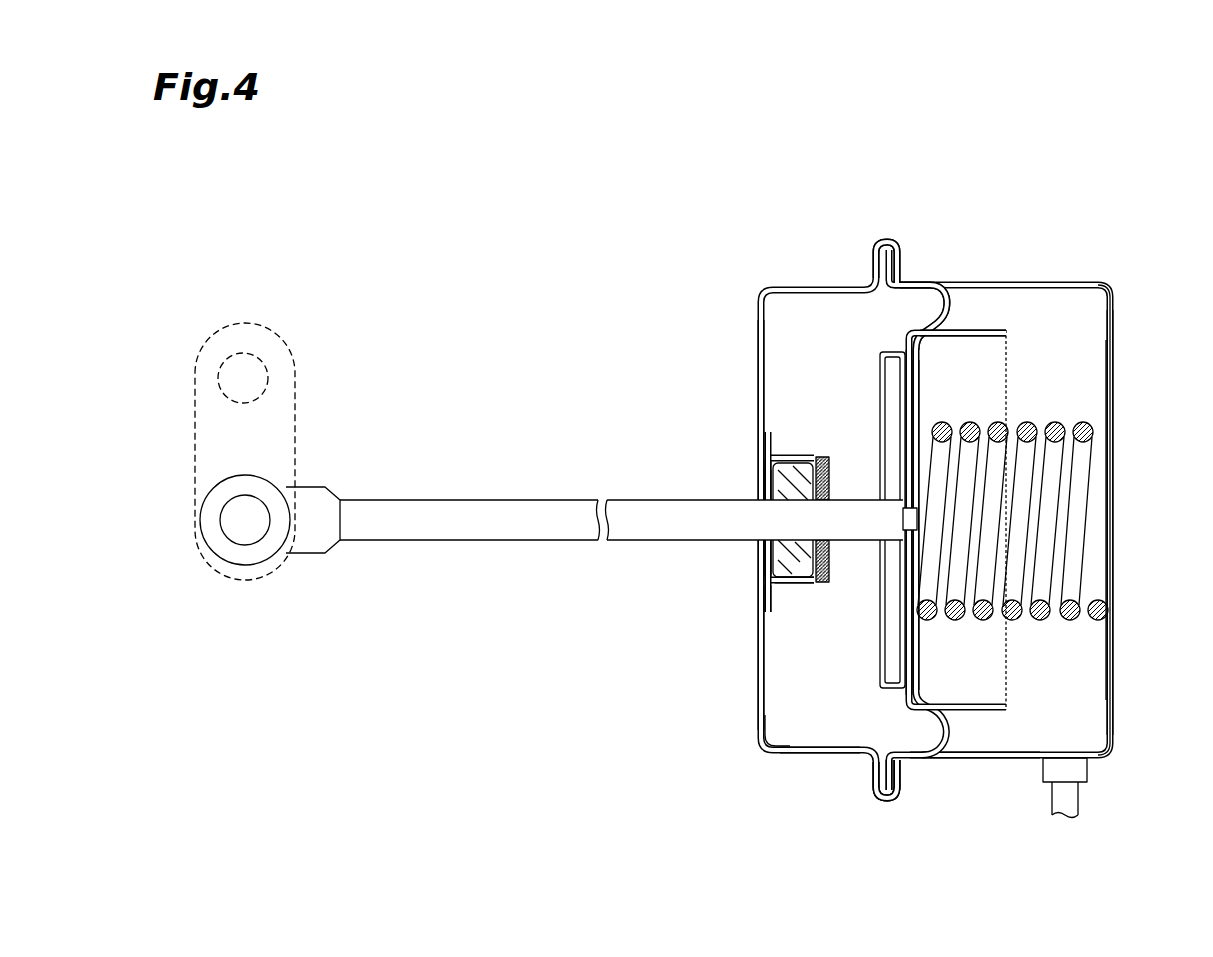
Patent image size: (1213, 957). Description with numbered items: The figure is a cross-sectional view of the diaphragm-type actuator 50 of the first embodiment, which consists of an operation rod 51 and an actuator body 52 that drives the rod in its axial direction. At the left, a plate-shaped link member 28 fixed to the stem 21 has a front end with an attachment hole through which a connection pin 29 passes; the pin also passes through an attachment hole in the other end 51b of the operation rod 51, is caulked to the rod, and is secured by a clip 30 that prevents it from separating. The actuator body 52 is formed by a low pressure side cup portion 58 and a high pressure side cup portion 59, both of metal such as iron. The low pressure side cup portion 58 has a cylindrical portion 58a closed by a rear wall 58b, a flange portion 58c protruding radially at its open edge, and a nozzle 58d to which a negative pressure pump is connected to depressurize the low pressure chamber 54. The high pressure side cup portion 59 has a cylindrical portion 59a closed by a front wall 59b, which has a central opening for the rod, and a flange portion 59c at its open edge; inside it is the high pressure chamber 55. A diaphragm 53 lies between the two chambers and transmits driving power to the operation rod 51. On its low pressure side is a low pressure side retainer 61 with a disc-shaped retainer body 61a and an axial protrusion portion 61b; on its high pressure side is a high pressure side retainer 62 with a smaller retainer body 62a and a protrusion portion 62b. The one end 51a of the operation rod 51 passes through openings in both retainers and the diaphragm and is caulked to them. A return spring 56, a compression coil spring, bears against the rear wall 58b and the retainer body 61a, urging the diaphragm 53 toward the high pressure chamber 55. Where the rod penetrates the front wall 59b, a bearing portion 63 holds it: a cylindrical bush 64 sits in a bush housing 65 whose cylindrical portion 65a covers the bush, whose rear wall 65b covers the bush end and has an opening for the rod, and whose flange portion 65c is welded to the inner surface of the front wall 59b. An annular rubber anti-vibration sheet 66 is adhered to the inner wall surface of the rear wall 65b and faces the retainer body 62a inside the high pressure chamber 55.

The stem 21 is at (230, 352).
The link member 28 is at (298, 416).
The connection pin 29 is at (232, 528).
The clip 30 is at (246, 557).
The diaphragm-type actuator 50 is at (575, 212).
The operation rod 51 is at (470, 522).
The one end of the operation rod 51a is at (912, 517).
The other end of the operation rod 51b is at (310, 546).
The actuator body 52 is at (842, 174).
The diaphragm 53 is at (903, 400).
The low pressure chamber 54 is at (1093, 653).
The high pressure chamber 55 is at (776, 718).
The return spring 56 is at (1083, 460).
The low pressure side cup portion 58 is at (938, 285).
The cylindrical portion 58a is at (997, 760).
The rear wall 58b is at (1115, 700).
The flange portion 58c is at (897, 785).
The nozzle 58d is at (1071, 797).
The high pressure side cup portion 59 is at (848, 285).
The cylindrical portion 59a is at (818, 757).
The front wall 59b is at (757, 724).
The flange portion 59c is at (873, 792).
The low pressure side retainer 61 is at (972, 216).
The retainer body 61a is at (920, 363).
The protrusion portion 61b is at (990, 330).
The high pressure side retainer 62 is at (810, 216).
The retainer body 62a is at (905, 396).
The protrusion portion 62b is at (890, 350).
The bearing portion 63 is at (729, 554).
The bush 64 is at (786, 483).
The bush housing 65 is at (766, 446).
The cylindrical portion 65a is at (787, 603).
The rear wall 65b is at (810, 555).
The flange portion 65c is at (757, 604).
The anti-vibration sheet 66 is at (817, 583).